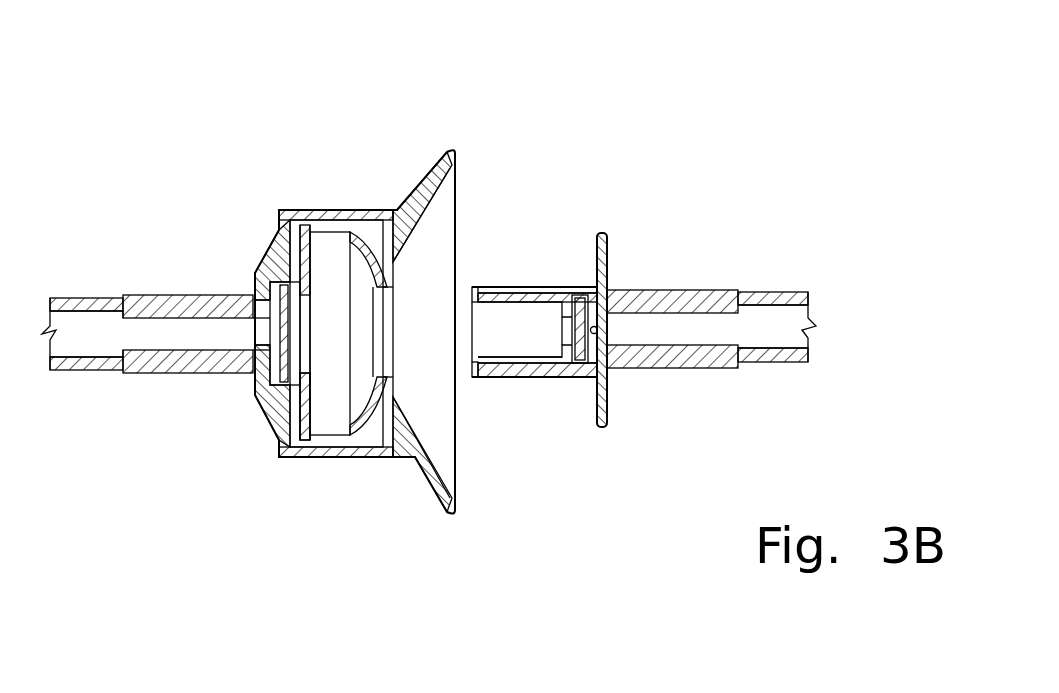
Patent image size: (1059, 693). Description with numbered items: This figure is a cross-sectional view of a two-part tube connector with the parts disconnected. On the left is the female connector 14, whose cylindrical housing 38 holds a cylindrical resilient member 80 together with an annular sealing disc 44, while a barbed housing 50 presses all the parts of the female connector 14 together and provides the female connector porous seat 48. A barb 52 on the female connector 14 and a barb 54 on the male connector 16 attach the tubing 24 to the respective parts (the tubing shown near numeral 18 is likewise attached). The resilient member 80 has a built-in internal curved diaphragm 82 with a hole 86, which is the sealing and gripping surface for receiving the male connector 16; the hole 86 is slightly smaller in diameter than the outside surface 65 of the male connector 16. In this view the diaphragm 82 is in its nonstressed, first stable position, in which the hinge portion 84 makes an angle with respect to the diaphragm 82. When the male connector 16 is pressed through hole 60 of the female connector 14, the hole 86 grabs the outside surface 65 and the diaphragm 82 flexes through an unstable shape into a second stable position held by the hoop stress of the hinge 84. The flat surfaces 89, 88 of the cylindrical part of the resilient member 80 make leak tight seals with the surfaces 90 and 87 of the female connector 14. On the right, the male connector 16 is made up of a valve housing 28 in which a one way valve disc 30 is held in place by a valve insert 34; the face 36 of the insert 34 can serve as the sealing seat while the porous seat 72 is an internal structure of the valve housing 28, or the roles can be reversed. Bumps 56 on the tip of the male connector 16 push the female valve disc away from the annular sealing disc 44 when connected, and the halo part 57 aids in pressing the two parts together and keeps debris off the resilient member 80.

The female connector 14 is at (453, 128).
The male connector 16 is at (735, 128).
The tube 18 is at (763, 300).
The tubing 24 is at (88, 303).
The valve housing 28 is at (558, 290).
The one way valve disc 30 is at (580, 290).
The valve insert 34 is at (525, 293).
The face of insert 36 is at (528, 378).
The cylindrical housing 38 is at (393, 450).
The annular sealing disc 44 is at (305, 253).
The female connector porous seat 48 is at (257, 292).
The barbed housing 50 is at (277, 410).
The barb 52 is at (190, 372).
The barb 54 is at (727, 367).
The bumps 56 is at (473, 330).
The halo part 57 is at (607, 387).
The hole 60 is at (456, 482).
The outside surface 65 is at (547, 350).
The male connector porous seat 72 is at (598, 330).
The cylindrical resilient member 80 is at (367, 442).
The curved diaphragm 82 is at (340, 233).
The hinge portion 84 is at (356, 232).
The diaphragm hole 86 is at (400, 313).
The surface of female connector 87 is at (396, 246).
The flat surface 88 is at (377, 262).
The flat surface 89 is at (340, 457).
The surface of female connector 90 is at (273, 433).